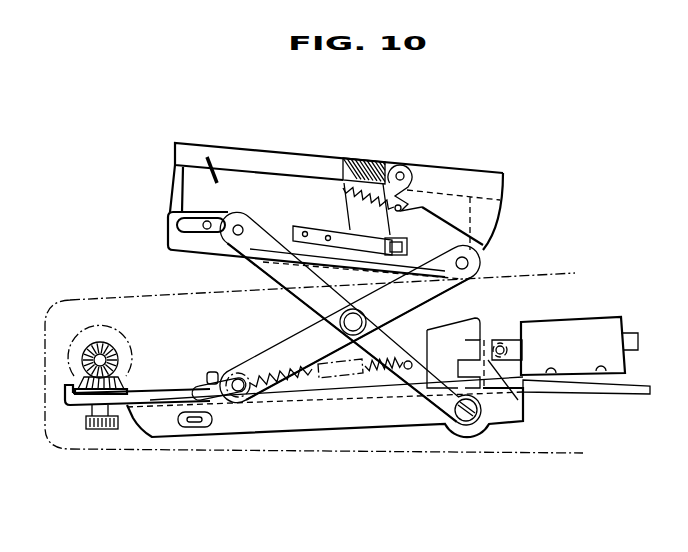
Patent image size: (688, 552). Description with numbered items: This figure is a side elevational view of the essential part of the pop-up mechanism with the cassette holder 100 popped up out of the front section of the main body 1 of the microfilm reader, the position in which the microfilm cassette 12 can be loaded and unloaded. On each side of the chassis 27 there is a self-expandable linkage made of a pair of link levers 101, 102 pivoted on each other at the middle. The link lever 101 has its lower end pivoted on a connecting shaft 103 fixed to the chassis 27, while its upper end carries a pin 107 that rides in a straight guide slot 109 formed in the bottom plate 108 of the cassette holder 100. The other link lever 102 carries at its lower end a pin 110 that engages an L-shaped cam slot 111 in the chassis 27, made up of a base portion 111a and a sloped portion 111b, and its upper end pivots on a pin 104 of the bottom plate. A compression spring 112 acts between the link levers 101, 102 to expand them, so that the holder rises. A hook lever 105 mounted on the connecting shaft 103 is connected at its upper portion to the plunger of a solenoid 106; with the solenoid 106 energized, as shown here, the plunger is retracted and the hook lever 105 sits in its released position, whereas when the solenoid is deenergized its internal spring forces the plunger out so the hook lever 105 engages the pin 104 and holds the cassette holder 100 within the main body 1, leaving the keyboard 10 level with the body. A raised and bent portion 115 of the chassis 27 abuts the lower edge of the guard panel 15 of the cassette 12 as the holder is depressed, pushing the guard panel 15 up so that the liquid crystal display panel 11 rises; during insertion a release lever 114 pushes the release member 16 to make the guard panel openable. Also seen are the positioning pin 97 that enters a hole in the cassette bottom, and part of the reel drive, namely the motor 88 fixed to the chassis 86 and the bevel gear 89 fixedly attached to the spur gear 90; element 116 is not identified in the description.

The main body 1 is at (106, 298).
The keyboard 10 is at (258, 158).
The liquid crystal display panel 11 is at (438, 165).
The microfilm cassette 12 is at (173, 188).
The guard panel 15 is at (503, 202).
The release member 16 is at (405, 232).
The chassis 27 is at (362, 424).
The chassis 86 is at (150, 397).
The motor 88 is at (120, 345).
The bevel gear 89 is at (74, 375).
The spur gear 90 is at (102, 429).
The positioning pin 97 is at (210, 371).
The cassette holder 100 is at (207, 157).
The link lever 101 is at (410, 373).
The link lever 102 is at (270, 350).
The connecting shaft 103 is at (466, 425).
The pin 104 is at (474, 264).
The hook lever 105 is at (497, 380).
The solenoid 106 is at (595, 325).
The pin 107 is at (239, 238).
The bottom plate 108 is at (200, 248).
The guide slot 109 is at (233, 221).
The pin 110 is at (258, 395).
The cam slot 111 is at (262, 498).
The base portion 111a is at (190, 427).
The sloped portion 111b is at (232, 412).
The compression spring 112 is at (312, 392).
The release lever 114 is at (328, 228).
The raised and bent portion 115 is at (467, 318).
The cushion member 116 is at (368, 160).